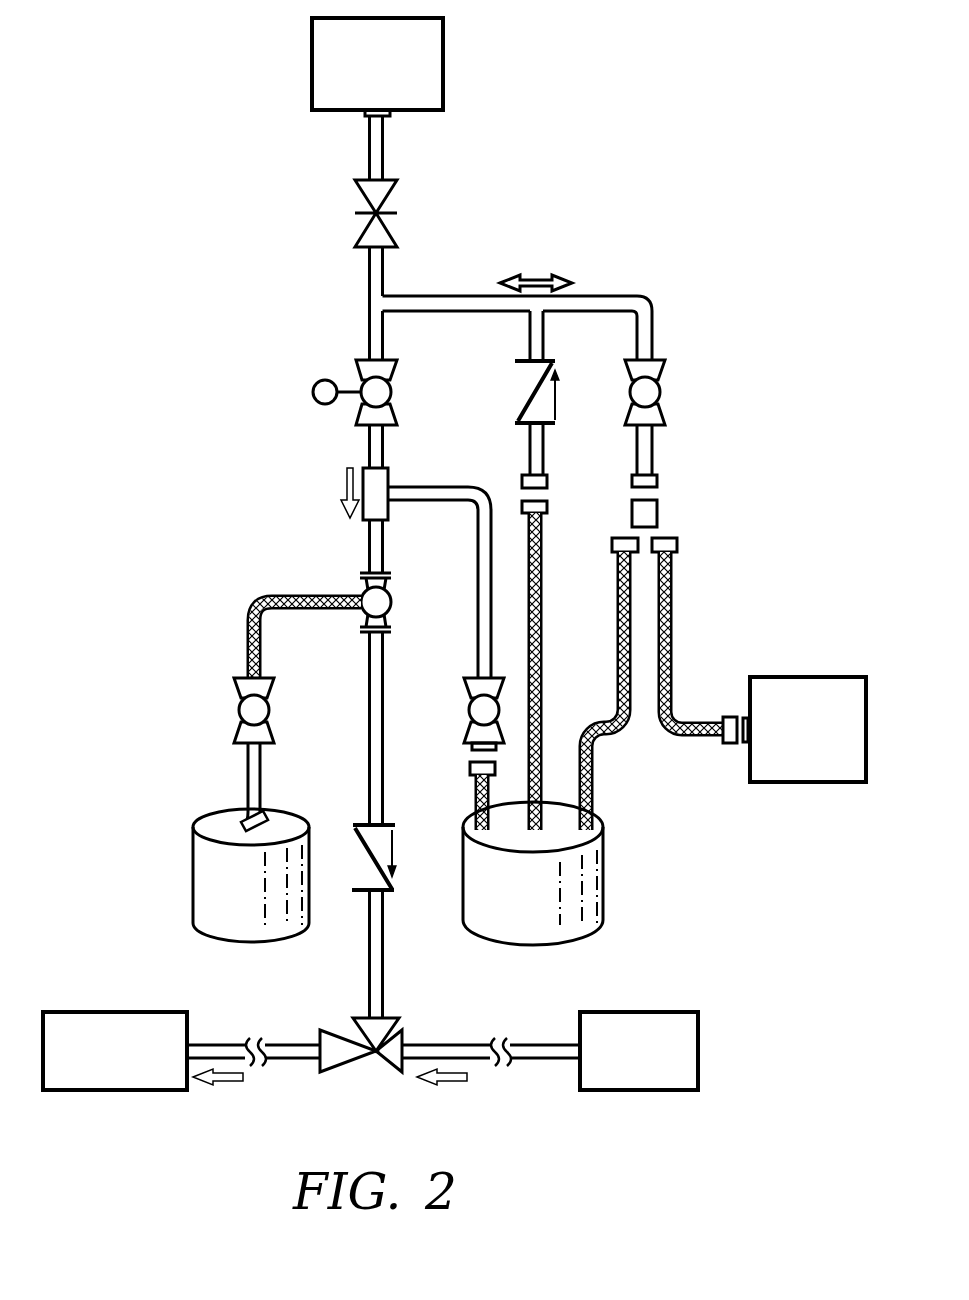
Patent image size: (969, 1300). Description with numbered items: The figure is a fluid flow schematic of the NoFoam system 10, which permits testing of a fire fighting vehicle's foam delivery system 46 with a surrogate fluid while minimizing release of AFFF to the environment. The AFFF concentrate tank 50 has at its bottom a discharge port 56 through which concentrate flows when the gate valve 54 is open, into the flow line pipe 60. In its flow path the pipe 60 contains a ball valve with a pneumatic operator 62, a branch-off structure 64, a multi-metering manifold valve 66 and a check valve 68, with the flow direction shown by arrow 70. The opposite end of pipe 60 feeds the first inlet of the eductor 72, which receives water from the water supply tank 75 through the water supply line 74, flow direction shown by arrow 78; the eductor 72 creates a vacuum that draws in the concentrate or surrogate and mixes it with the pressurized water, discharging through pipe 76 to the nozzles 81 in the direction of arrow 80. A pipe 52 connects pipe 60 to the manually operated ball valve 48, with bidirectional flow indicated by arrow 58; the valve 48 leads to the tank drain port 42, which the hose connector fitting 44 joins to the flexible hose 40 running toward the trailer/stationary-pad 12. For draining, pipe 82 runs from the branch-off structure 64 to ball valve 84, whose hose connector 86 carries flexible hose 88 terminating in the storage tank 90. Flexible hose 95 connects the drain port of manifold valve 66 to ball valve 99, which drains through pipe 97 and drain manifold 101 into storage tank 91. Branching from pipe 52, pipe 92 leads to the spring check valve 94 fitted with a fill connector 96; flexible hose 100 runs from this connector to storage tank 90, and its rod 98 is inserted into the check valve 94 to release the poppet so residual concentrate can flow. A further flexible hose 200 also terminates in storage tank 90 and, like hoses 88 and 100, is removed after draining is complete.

The NoFoam system 10 is at (160, 196).
The trailer/stationary-pad 12 is at (788, 677).
The flexible hose 40 is at (673, 585).
The tank drain port 42 is at (658, 482).
The hose connector fitting 44 is at (658, 513).
The foam delivery system 46 is at (575, 265).
The ball valve 48 is at (664, 386).
The AFFF concentrate tank 50 is at (312, 58).
The pipe 52 is at (452, 296).
The gate valve 54 is at (355, 198).
The discharge port 56 is at (367, 120).
The arrow 58 is at (530, 280).
The flow line pipe 60 is at (369, 326).
The ball valve with pneumatic operator 62 is at (398, 386).
The branch-off structure 64 is at (372, 512).
The multi-metering manifold valve 66 is at (392, 594).
The check valve 68 is at (353, 847).
The arrow 70 is at (342, 482).
The eductor 72 is at (360, 1072).
The water supply line 74 is at (540, 1060).
The water supply tank 75 is at (665, 1012).
The pipe 76 is at (290, 1060).
The arrow 78 is at (460, 1085).
The arrow 80 is at (228, 1085).
The nozzles 81 is at (60, 1012).
The pipe 82 is at (478, 545).
The ball valve 84 is at (464, 705).
The hose connector 86 is at (472, 756).
The flexible hose 88 is at (472, 792).
The storage tank 90 is at (592, 877).
The storage tank 91 is at (208, 878).
The pipe 92 is at (530, 324).
The spring check valve 94 is at (540, 372).
The flexible hose 95 is at (247, 655).
The fill connector 96 is at (548, 482).
The pipe 97 is at (247, 763).
The rod 98 is at (530, 440).
The ball valve 99 is at (233, 706).
The flexible hose 100 is at (528, 638).
The drain manifold 101 is at (248, 812).
The flexible hose 200 is at (617, 668).